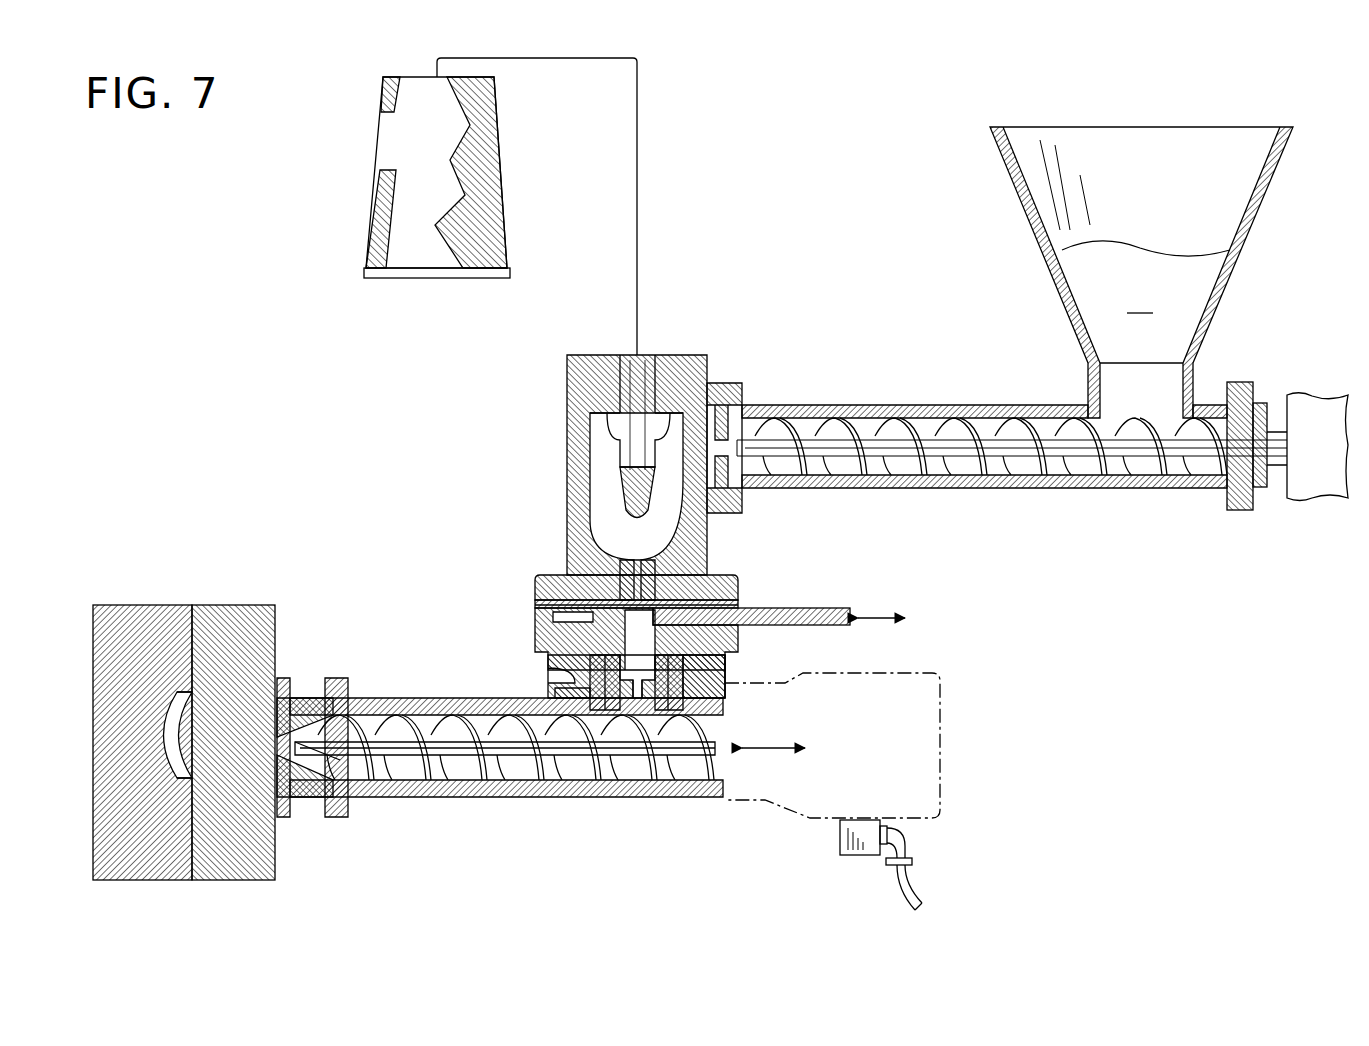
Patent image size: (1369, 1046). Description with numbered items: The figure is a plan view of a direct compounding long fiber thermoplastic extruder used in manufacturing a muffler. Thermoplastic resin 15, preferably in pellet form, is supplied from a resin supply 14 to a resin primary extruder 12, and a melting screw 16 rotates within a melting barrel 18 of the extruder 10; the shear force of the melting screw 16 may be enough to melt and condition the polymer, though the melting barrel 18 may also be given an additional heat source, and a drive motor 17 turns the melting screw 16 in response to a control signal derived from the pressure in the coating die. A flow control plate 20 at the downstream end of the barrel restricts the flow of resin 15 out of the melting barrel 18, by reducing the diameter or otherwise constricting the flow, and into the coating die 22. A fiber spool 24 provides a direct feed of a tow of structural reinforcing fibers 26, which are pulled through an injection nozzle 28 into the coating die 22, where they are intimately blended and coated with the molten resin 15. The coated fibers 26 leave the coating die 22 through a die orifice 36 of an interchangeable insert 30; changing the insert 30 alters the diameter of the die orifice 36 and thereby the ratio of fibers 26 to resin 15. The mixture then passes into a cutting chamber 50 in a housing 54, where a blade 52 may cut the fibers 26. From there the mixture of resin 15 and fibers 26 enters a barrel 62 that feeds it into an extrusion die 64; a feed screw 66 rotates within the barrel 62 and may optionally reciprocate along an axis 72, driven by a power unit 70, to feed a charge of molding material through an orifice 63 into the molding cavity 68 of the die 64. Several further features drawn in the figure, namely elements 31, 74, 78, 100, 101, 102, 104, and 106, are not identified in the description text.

The extruder 10 is at (816, 165).
The resin primary extruder 12 is at (1260, 392).
The resin supply 14 is at (1125, 127).
The resin 15 is at (1139, 301).
The melting screw 16 is at (880, 437).
The drive motor 17 is at (1320, 500).
The melting barrel 18 is at (1100, 492).
The flow control plate 20 is at (748, 462).
The coating die 22 is at (592, 352).
The fiber spool 24 is at (383, 137).
The structural reinforcing fibers 26 is at (637, 103).
The injection nozzle 28 is at (632, 452).
The interchangeable insert 30 is at (555, 600).
The flange 31 is at (695, 560).
The die orifice 36 is at (595, 545).
The cutting chamber 50 is at (645, 604).
The blade 52 is at (855, 622).
The housing 54 is at (535, 628).
The barrel 62 is at (405, 800).
The orifice 63 is at (317, 762).
The extrusion die 64 is at (147, 605).
The feed screw 66 is at (440, 770).
The molding cavity 68 is at (157, 733).
The power unit 70 is at (940, 732).
The axis 72 is at (770, 748).
The outlet pipe 74 is at (905, 840).
The actuator 78 is at (840, 835).
The manifold block 100 is at (560, 675).
The insert 101 is at (690, 688).
The insert 102 is at (680, 648).
The channel 104 is at (645, 703).
The inserts 106 is at (565, 688).